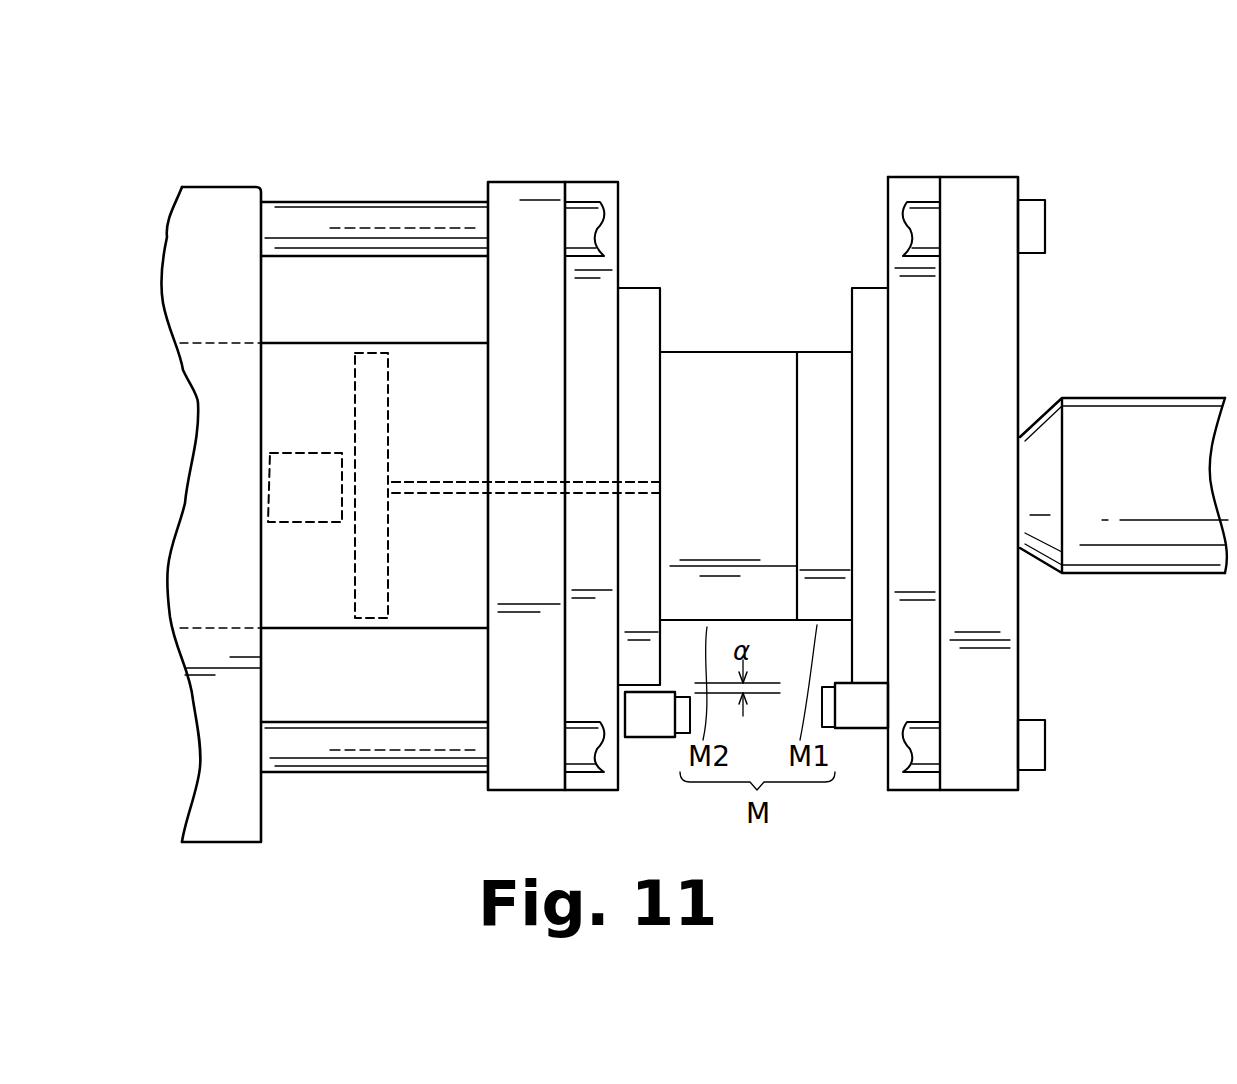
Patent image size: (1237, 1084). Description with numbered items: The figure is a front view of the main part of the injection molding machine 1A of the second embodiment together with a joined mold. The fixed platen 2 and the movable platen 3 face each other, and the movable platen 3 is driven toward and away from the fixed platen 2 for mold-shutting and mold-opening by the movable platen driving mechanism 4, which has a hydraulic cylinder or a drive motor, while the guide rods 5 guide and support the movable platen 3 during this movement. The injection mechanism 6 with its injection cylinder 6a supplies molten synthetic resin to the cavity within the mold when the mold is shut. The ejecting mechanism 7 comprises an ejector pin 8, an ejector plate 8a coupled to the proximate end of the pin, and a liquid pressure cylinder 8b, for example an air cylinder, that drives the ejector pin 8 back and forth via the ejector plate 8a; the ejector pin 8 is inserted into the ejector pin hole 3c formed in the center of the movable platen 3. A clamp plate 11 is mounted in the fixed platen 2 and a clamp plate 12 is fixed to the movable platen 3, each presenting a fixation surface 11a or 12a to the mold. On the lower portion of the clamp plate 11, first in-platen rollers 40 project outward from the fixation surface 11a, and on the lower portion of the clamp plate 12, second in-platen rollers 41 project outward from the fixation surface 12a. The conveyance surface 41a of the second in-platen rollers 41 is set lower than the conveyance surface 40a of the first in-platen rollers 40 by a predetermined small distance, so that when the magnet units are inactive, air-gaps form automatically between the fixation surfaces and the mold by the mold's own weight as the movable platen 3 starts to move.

The injection molding machine 1A is at (1160, 152).
The fixed platen 2 is at (1022, 191).
The movable platen 3 is at (572, 192).
The ejector pin hole 3c is at (515, 497).
The movable platen driving mechanism 4 is at (296, 322).
The guide rods 5 is at (385, 202).
The injection mechanism 6 is at (1136, 398).
The injection cylinder 6a is at (1182, 397).
The ejecting mechanism 7 is at (345, 578).
The ejector pin 8 is at (455, 500).
The ejector plate 8a is at (392, 562).
The liquid pressure cylinder 8b is at (300, 528).
The clamp plate 11 is at (887, 273).
The fixation surface 11a is at (887, 389).
The clamp plate 12 is at (622, 275).
The fixation surface 12a is at (622, 390).
The first in-platen rollers 40 is at (858, 730).
The conveyance surface 40a is at (868, 683).
The second in-platen rollers 41 is at (648, 740).
The conveyance surface 41a is at (645, 692).